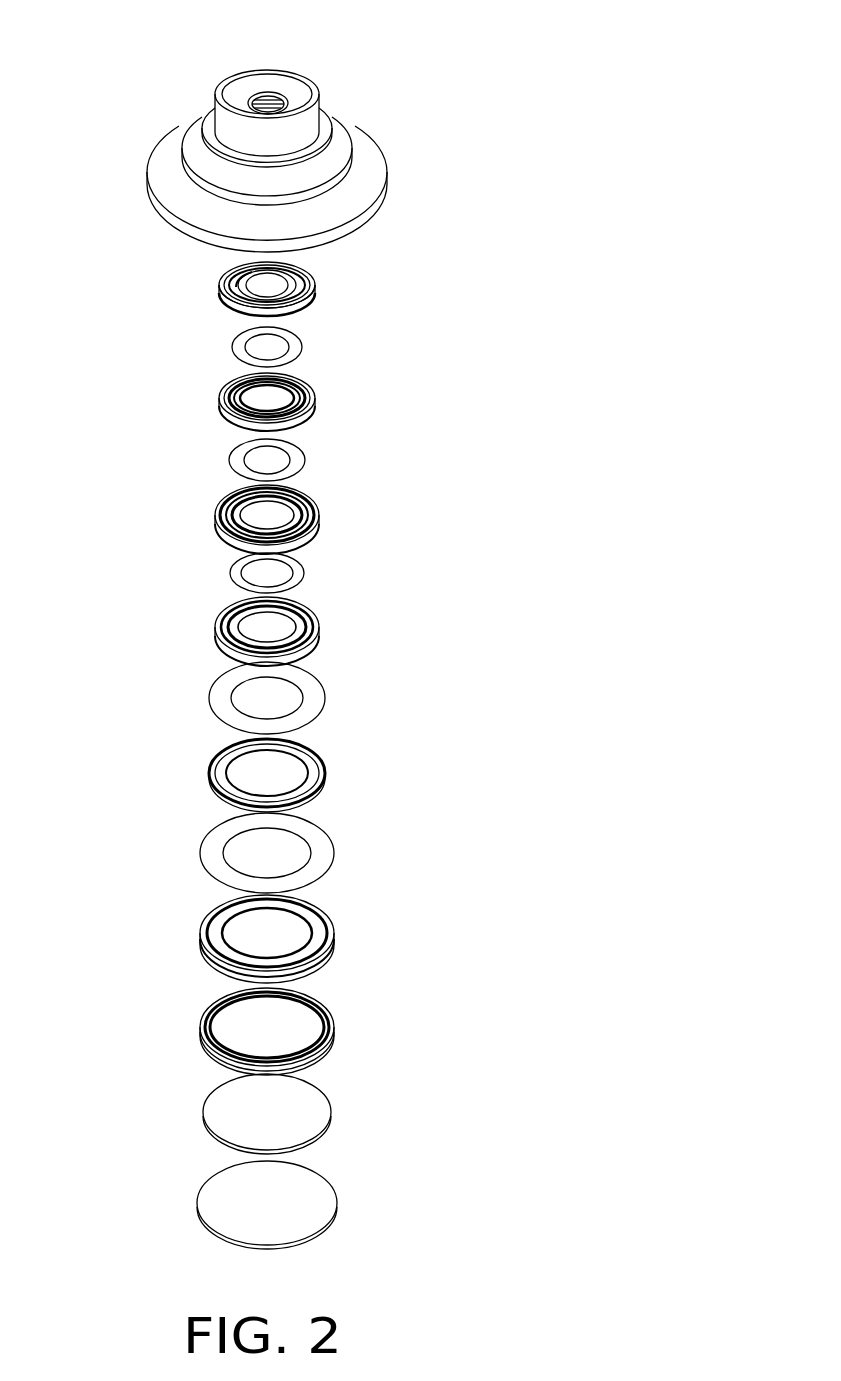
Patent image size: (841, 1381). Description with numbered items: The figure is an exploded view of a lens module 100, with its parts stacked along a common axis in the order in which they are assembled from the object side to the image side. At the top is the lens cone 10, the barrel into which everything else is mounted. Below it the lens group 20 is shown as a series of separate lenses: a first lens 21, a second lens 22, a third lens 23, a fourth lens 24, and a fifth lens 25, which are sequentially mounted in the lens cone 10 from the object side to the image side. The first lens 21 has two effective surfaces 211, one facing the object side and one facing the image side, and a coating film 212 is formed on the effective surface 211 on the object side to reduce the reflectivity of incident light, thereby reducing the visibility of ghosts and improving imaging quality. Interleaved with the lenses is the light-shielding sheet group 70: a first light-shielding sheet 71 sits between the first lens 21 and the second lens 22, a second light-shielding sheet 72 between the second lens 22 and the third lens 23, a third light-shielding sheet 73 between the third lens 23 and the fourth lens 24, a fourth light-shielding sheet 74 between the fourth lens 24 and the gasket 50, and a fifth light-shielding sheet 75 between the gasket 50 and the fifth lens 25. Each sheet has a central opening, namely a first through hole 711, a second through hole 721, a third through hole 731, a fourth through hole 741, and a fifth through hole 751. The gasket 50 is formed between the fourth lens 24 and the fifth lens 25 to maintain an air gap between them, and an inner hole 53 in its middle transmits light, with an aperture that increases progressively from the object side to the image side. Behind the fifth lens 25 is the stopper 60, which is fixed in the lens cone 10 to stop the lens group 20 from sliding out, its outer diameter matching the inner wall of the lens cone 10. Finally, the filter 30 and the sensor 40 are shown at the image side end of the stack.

The lens module 100 is at (384, 42).
The lens cone 10 is at (365, 162).
The lens group 20 is at (426, 425).
The first lens 21 is at (292, 289).
The effective surface 211 is at (242, 277).
The coating film 212 is at (270, 280).
The second lens 22 is at (303, 397).
The third lens 23 is at (305, 510).
The fourth lens 24 is at (310, 626).
The fifth lens 25 is at (320, 932).
The filter 30 is at (315, 1114).
The sensor 40 is at (327, 1206).
The gasket 50 is at (322, 772).
The inner hole 53 is at (299, 780).
The stopper 60 is at (327, 1031).
The light-shielding sheet group 70 is at (126, 350).
The first light-shielding sheet 71 is at (242, 348).
The first through hole 711 is at (250, 354).
The second light-shielding sheet 72 is at (245, 461).
The second through hole 721 is at (250, 466).
The third light-shielding sheet 73 is at (245, 575).
The third through hole 731 is at (248, 582).
The fourth light-shielding sheet 74 is at (218, 698).
The fourth through hole 741 is at (244, 707).
The fifth light-shielding sheet 75 is at (210, 850).
The fifth through hole 751 is at (234, 859).